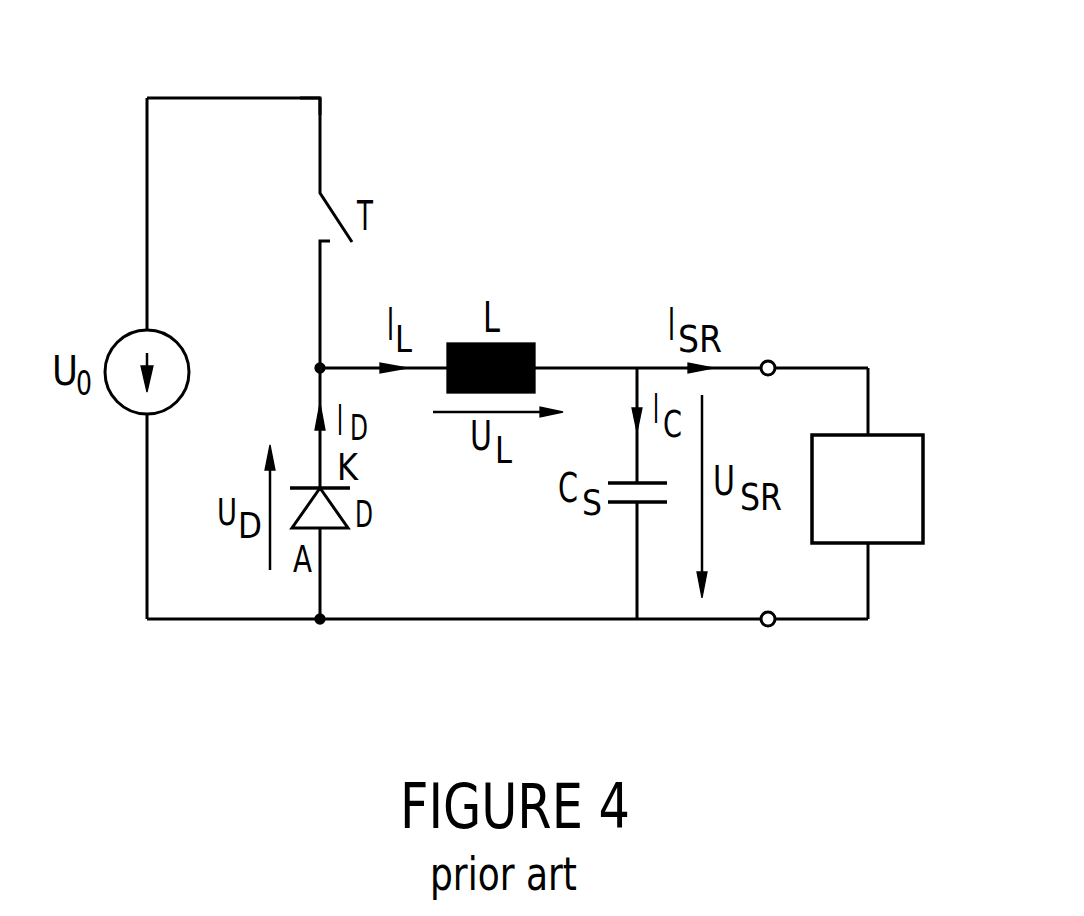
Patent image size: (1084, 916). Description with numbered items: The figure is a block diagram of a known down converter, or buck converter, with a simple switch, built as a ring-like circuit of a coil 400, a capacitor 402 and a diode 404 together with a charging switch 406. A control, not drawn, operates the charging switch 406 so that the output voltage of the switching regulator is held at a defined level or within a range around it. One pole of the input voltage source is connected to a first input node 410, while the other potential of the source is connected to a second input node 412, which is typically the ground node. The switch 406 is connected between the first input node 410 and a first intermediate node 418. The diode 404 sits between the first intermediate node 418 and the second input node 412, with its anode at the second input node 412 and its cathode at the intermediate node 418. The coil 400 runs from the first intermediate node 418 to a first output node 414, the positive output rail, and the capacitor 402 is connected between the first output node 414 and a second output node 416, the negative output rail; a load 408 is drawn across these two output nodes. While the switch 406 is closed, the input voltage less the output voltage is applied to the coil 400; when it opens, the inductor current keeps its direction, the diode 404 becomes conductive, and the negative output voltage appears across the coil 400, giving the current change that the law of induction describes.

The coil 400 is at (522, 343).
The capacitor 402 is at (615, 507).
The diode 404 is at (330, 530).
The charging switch 406 is at (320, 147).
The load 408 is at (898, 435).
The first input node 410 is at (320, 98).
The second input node 412 is at (318, 643).
The first output node 414 is at (770, 361).
The second output node 416 is at (770, 626).
The first intermediate node 418 is at (320, 368).